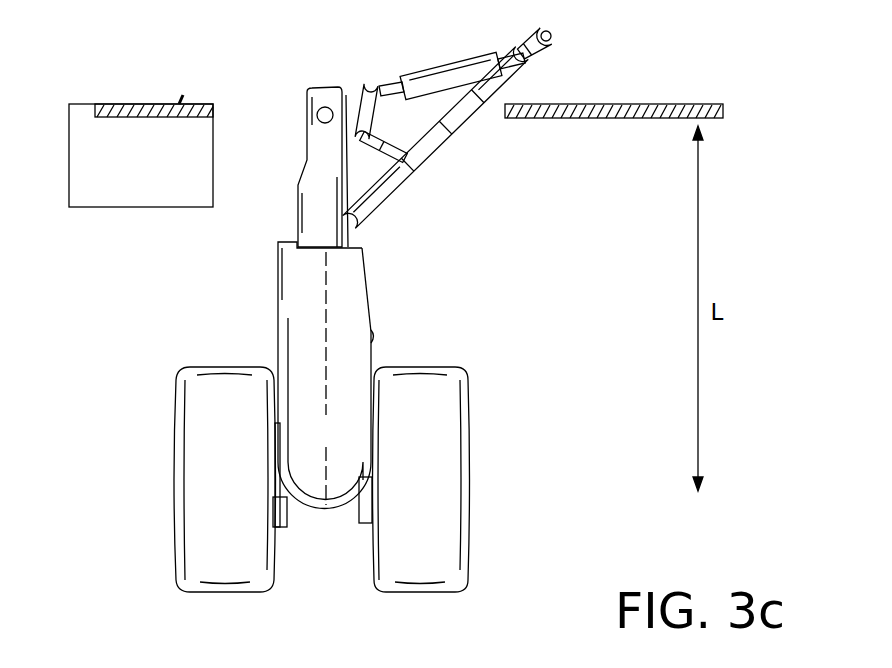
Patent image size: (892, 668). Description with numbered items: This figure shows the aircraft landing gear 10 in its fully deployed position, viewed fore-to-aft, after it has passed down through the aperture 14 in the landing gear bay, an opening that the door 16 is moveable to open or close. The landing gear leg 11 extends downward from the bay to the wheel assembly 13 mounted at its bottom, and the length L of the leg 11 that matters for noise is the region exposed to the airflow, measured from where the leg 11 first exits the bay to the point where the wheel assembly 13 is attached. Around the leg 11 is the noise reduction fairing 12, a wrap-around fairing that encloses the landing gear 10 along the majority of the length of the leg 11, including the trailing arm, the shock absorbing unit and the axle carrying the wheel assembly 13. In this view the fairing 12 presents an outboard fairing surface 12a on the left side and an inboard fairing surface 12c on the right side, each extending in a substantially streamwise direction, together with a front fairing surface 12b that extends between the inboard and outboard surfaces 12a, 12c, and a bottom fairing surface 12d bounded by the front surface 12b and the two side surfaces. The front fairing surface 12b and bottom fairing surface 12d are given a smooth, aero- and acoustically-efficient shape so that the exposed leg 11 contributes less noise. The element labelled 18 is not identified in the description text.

The landing gear 10 is at (418, 271).
The landing gear leg 11 is at (308, 218).
The noise reduction fairing 12 is at (360, 353).
The outboard fairing surface 12a is at (268, 340).
The front fairing surface 12b is at (303, 441).
The inboard fairing surface 12c is at (379, 308).
The bottom fairing surface 12d is at (320, 521).
The wheel assembly 13 is at (448, 450).
The aperture 14 is at (262, 78).
The door 16 is at (294, 165).
The aircraft structure 18 is at (104, 105).